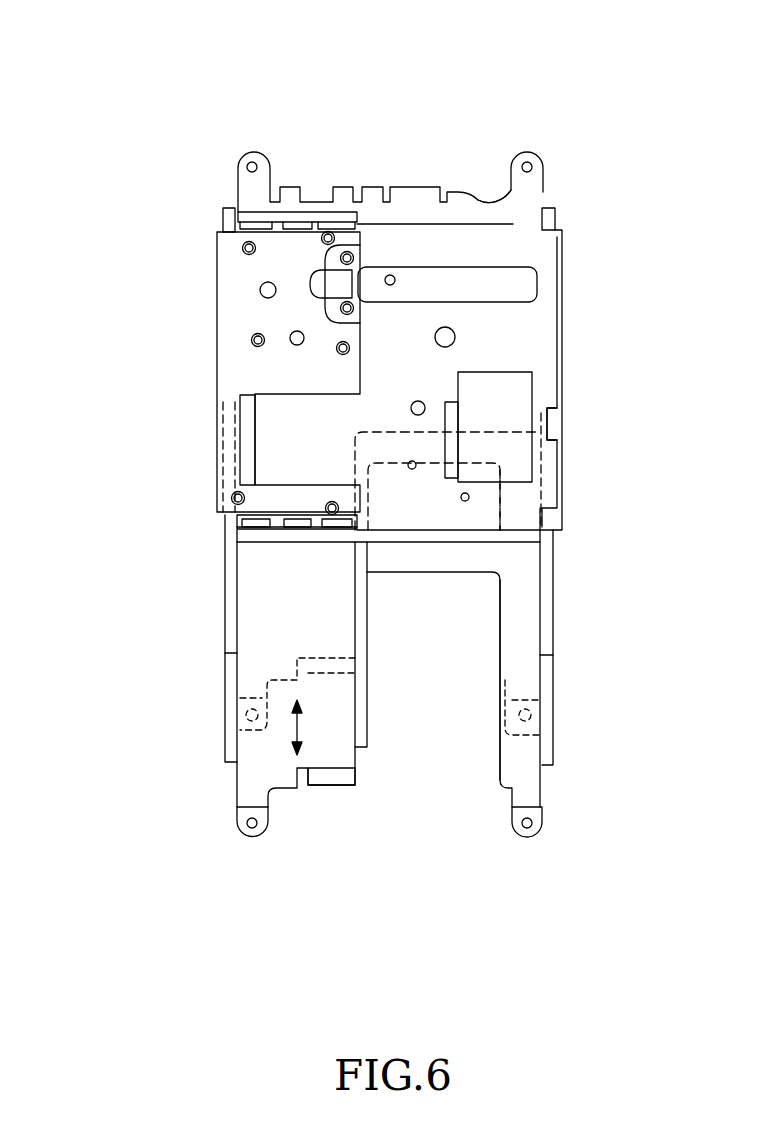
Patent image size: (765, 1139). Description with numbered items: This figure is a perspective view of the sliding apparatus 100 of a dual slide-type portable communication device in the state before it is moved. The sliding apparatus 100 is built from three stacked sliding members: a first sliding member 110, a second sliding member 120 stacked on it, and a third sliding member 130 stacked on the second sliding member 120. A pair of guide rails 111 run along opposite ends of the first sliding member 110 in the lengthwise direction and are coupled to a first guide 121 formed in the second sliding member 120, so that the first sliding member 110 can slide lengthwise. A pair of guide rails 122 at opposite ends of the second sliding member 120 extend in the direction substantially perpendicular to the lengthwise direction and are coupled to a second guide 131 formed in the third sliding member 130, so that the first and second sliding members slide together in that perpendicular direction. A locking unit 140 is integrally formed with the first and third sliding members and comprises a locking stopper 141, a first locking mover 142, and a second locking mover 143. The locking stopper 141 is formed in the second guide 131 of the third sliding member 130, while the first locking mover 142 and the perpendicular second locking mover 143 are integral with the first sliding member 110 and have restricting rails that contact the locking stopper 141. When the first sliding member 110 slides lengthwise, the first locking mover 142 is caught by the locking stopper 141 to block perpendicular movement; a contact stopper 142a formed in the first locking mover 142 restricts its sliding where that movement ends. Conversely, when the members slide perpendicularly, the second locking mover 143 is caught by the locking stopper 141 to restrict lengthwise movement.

The sliding apparatus 100 is at (595, 90).
The first sliding member 110 is at (522, 689).
The guide rails 111 is at (232, 750).
The second sliding member 120 is at (537, 356).
The first guide 121 is at (562, 428).
The guide rails 122 is at (545, 197).
The third sliding member 130 is at (232, 298).
The second guide 131 is at (236, 213).
The locking unit 140 is at (110, 572).
The locking stopper 141 is at (278, 545).
The first locking mover 142 is at (360, 598).
The contact stopper 142a is at (333, 787).
The second locking mover 143 is at (400, 545).